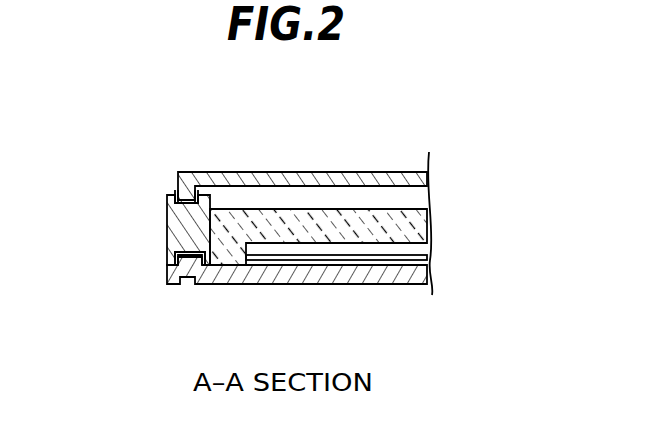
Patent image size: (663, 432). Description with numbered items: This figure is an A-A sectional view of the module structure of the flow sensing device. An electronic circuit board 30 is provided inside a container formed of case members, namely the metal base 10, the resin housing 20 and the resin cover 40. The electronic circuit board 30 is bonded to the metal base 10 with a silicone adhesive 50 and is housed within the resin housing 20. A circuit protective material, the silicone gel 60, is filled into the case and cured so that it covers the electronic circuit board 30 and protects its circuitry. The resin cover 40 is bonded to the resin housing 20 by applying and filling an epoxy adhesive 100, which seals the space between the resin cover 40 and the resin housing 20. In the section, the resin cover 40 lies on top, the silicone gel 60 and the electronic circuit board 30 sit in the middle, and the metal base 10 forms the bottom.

The metal base 10 is at (325, 283).
The resin housing 20 is at (177, 230).
The electronic circuit board 30 is at (427, 252).
The resin cover 40 is at (427, 179).
The silicone adhesive 50 is at (177, 264).
The silicone gel 60 is at (427, 216).
The epoxy adhesive 100 is at (180, 193).